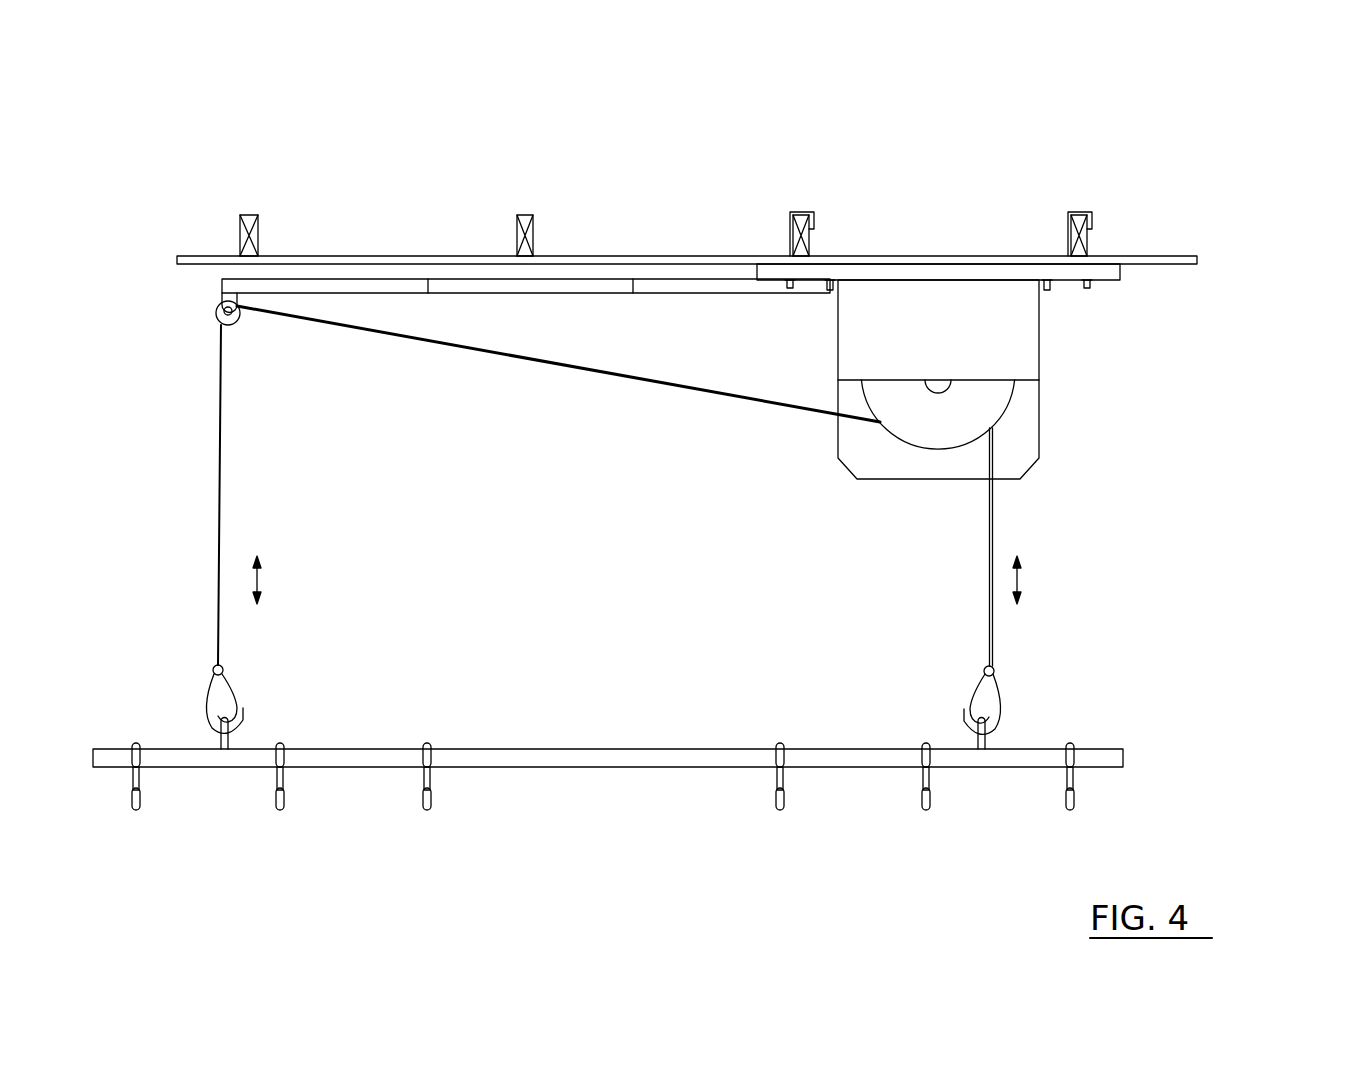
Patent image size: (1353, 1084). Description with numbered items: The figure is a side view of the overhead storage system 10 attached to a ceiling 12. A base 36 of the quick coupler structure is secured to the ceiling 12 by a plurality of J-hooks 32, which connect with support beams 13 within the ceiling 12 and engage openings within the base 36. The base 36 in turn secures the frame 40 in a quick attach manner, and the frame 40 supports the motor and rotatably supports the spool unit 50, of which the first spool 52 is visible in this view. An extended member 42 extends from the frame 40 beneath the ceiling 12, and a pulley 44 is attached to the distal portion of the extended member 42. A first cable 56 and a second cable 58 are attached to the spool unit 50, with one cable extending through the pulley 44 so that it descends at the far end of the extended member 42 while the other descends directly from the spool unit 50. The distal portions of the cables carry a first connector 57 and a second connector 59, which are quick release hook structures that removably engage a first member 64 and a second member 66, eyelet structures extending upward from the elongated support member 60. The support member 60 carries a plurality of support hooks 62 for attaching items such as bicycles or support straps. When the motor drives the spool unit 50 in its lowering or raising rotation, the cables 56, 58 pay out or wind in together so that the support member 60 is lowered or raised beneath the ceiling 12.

The overhead storage system 10 is at (1212, 152).
The ceiling 12 is at (975, 258).
The support beams 13 is at (533, 235).
The J-hooks 32 is at (800, 214).
The base 36 is at (1125, 278).
The frame 40 is at (1024, 330).
The extended member 42 is at (387, 282).
The pulley 44 is at (216, 313).
The spool unit 50 is at (1030, 415).
The first spool 52 is at (937, 438).
The first cable 56 is at (222, 468).
The first connector 57 is at (232, 695).
The second cable 58 is at (993, 530).
The second connector 59 is at (1000, 708).
The support member 60 is at (587, 752).
The support hooks 62 is at (143, 805).
The first member 64 is at (215, 738).
The second member 66 is at (978, 740).